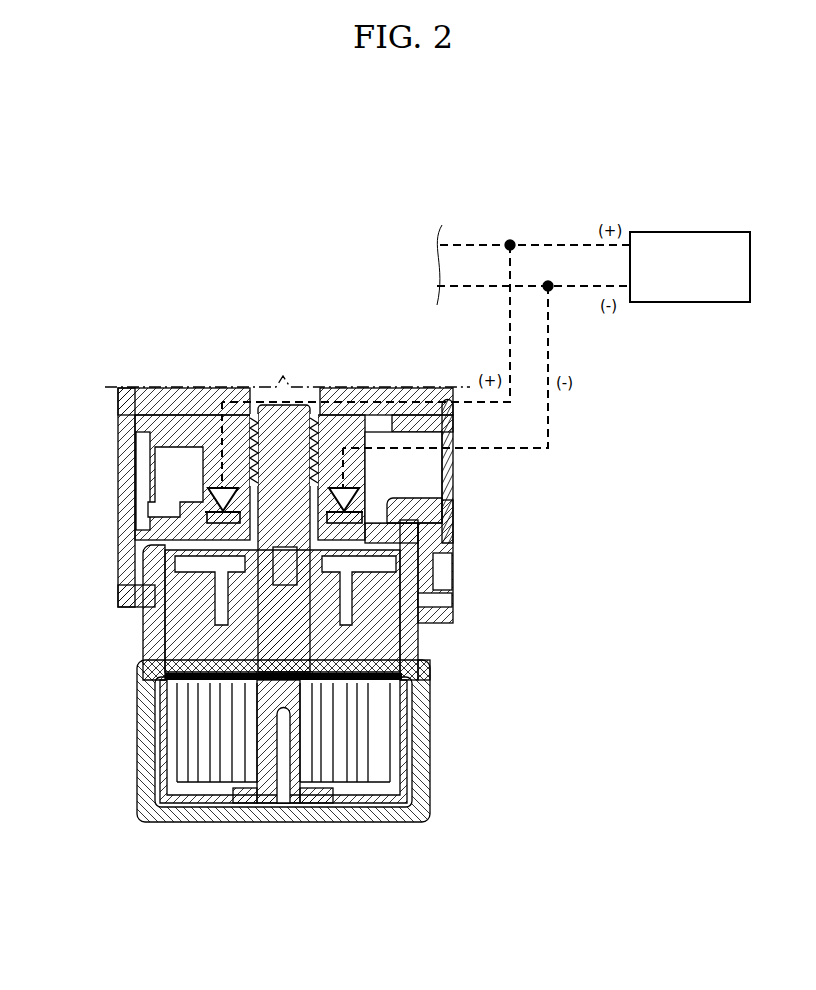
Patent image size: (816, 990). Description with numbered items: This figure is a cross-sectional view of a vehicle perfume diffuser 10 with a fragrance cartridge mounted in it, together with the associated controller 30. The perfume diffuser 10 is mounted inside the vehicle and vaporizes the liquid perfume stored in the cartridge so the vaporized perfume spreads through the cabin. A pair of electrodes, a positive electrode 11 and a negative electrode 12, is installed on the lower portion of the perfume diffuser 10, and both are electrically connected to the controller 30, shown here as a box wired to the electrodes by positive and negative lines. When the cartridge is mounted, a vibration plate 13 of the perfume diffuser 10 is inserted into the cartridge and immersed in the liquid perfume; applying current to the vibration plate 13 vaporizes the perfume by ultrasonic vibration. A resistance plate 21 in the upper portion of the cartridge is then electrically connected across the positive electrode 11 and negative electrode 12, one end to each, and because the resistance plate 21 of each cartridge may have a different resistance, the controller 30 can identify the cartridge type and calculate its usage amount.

The perfume diffuser 10 is at (104, 418).
The positive electrode 11 is at (205, 501).
The negative electrode 12 is at (396, 498).
The vibration plate 13 is at (382, 641).
The resistance plate 21 is at (382, 533).
The controller 30 is at (692, 304).